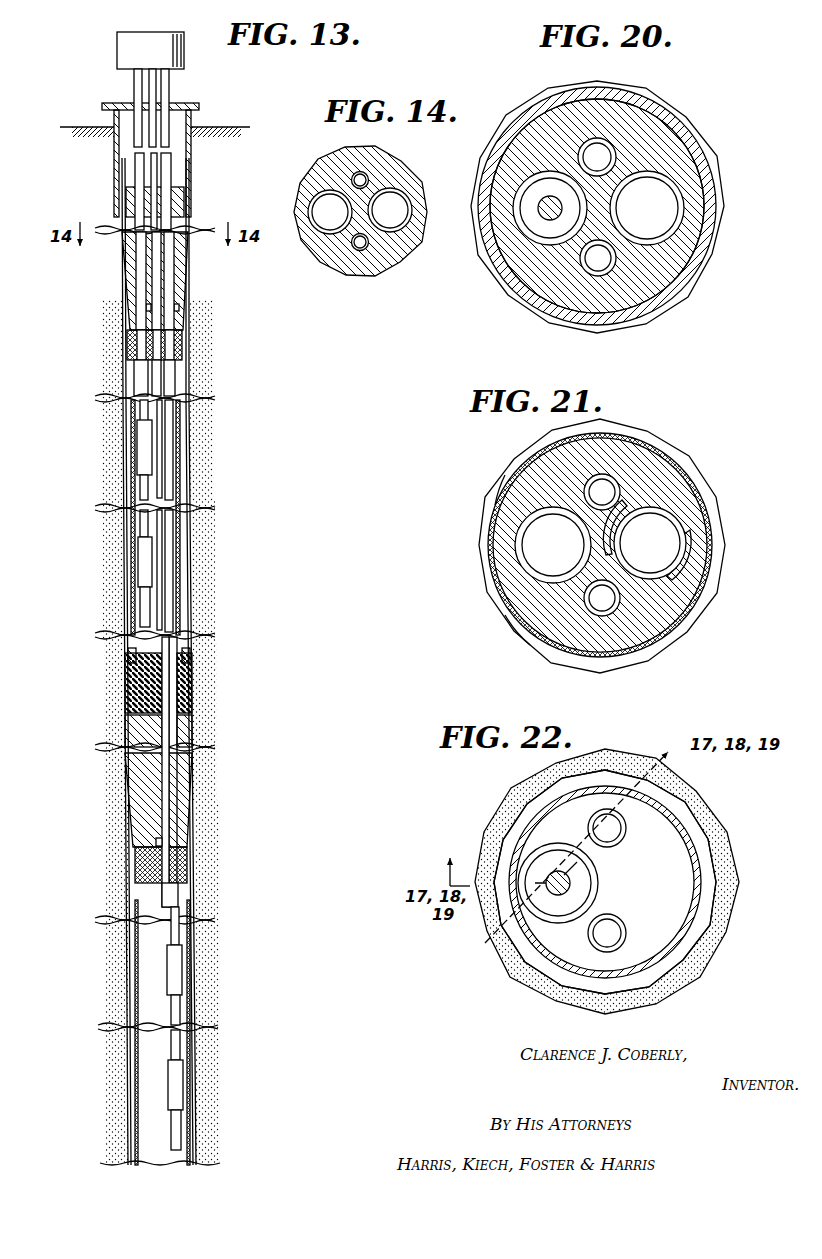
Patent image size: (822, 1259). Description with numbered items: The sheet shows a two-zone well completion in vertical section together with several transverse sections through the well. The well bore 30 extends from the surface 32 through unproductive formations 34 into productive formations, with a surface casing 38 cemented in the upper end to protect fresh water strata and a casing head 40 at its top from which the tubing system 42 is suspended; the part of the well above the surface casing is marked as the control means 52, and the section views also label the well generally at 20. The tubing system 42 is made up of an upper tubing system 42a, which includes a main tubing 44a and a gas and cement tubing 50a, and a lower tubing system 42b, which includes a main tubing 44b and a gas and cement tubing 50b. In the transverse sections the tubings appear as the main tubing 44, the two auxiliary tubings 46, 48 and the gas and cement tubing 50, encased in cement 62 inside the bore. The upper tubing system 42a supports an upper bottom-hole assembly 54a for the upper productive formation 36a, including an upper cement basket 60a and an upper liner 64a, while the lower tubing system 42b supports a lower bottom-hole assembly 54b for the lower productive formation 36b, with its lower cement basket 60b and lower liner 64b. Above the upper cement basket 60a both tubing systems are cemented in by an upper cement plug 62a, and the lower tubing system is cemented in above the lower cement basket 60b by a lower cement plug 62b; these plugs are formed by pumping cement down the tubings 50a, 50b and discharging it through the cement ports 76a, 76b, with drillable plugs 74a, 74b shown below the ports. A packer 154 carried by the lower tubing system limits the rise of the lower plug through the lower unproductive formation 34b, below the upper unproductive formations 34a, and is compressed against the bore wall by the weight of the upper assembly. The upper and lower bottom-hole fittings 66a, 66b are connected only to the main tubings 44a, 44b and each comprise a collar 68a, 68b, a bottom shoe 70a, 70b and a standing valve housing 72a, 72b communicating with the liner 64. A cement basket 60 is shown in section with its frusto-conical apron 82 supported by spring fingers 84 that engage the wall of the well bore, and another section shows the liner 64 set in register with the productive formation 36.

In FIG. 20, the well 20 is at (692, 136).
In FIG. 13, the well bore 30 is at (192, 195).
In FIG. 21, the well bore 30 is at (640, 458).
In FIG. 22, the well bore 30 is at (688, 798).
In FIG. 13, the surface 32 is at (85, 125).
In FIG. 20, the unproductive formations 34 is at (722, 208).
In FIG. 13, the upper unproductive formations 34a is at (356, 335).
In FIG. 13, the lower unproductive formation 34b is at (207, 665).
In FIG. 22, the productive formation 36 is at (728, 858).
In FIG. 13, the upper productive formation 36a is at (205, 540).
In FIG. 13, the lower productive formation 36b is at (215, 847).
In FIG. 13, the surface casing 38 is at (192, 152).
In FIG. 20, the surface casing 38 is at (710, 158).
In FIG. 13, the casing head 40 is at (196, 106).
In FIG. 13, the tubing system 42 is at (172, 462).
In FIG. 20, the tubing system 42 is at (645, 168).
In FIG. 21, the tubing system 42 is at (512, 530).
In FIG. 22, the tubing system 42 is at (548, 925).
In FIG. 13, the upper tubing system 42a is at (136, 300).
In FIG. 14, the upper tubing system 42a is at (350, 243).
In FIG. 13, the lower tubing system 42b is at (172, 615).
In FIG. 14, the lower tubing system 42b is at (381, 172).
In FIG. 20, the main tubing 44 is at (535, 248).
In FIG. 21, the main tubing 44 is at (566, 585).
In FIG. 22, the main tubing 44 is at (527, 905).
In FIG. 14, the upper main tubing 44a is at (330, 190).
In FIG. 14, the lower main tubing 44b is at (413, 186).
In FIG. 20, the auxiliary tubing 46 is at (607, 140).
In FIG. 21, the auxiliary tubing 46 is at (612, 480).
In FIG. 22, the auxiliary tubing 46 is at (590, 818).
In FIG. 20, the auxiliary tubing 48 is at (616, 270).
In FIG. 21, the auxiliary tubing 48 is at (640, 630).
In FIG. 22, the auxiliary tubing 48 is at (624, 943).
In FIG. 20, the gas and cement tubing 50 is at (686, 228).
In FIG. 21, the gas and cement tubing 50 is at (683, 520).
In FIG. 13, the upper gas and cement tubing 50a is at (153, 262).
In FIG. 14, the upper gas and cement tubing 50a is at (370, 246).
In FIG. 13, the lower gas and cement tubing 50b is at (162, 770).
In FIG. 14, the lower gas and cement tubing 50b is at (370, 174).
In FIG. 13, the control means 52 is at (184, 58).
In FIG. 13, the upper bottom-hole assembly 54a is at (190, 378).
In FIG. 13, the lower bottom-hole assembly 54b is at (190, 877).
In FIG. 21, the cement basket 60 is at (713, 524).
In FIG. 13, the upper cement basket 60a is at (185, 288).
In FIG. 13, the lower cement basket 60b is at (188, 795).
In FIG. 20, the cement plug 62 is at (680, 268).
In FIG. 21, the cement plug 62 is at (695, 590).
In FIG. 13, the upper cement plug 62a is at (126, 205).
In FIG. 14, the upper cement plug 62a is at (366, 168).
In FIG. 13, the lower cement plug 62b is at (125, 740).
In FIG. 22, the liner 64 is at (695, 845).
In FIG. 13, the upper liner 64a is at (183, 410).
In FIG. 13, the lower liner 64b is at (191, 905).
In FIG. 13, the upper bottom-hole fitting 66a is at (142, 495).
In FIG. 13, the lower bottom-hole fitting 66b is at (178, 1027).
In FIG. 13, the collar 68a is at (140, 435).
In FIG. 13, the collar 68b is at (176, 968).
In FIG. 13, the bottom shoe 70a is at (140, 560).
In FIG. 13, the bottom shoe 70b is at (180, 1085).
In FIG. 13, the standing valve housing 72a is at (140, 598).
In FIG. 13, the standing valve housing 72b is at (182, 1130).
In FIG. 13, the drillable plug 74a is at (170, 350).
In FIG. 13, the drillable plug 74b is at (138, 880).
In FIG. 13, the upper cement ports 76a is at (166, 316).
In FIG. 13, the lower cement ports 76b is at (156, 843).
In FIG. 21, the apron 82 is at (690, 480).
In FIG. 21, the spring fingers 84 is at (518, 472).
In FIG. 13, the packer 154 is at (195, 695).